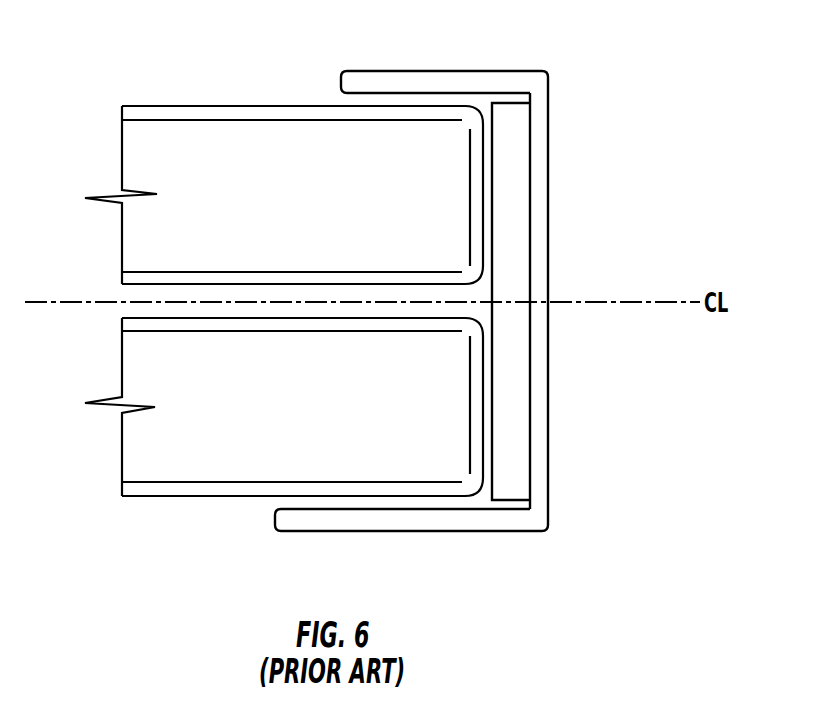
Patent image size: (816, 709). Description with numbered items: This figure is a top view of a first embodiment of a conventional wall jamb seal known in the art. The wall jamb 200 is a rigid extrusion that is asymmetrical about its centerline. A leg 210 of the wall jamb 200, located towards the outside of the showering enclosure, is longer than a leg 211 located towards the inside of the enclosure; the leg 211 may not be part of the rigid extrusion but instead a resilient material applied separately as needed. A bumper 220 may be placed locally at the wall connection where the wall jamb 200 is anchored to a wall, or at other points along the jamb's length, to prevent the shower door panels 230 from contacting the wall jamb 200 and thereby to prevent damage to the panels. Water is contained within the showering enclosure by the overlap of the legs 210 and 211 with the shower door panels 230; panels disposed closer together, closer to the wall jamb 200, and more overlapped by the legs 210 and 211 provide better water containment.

The wall jamb 200 is at (603, 206).
The leg 211 is at (508, 45).
The leg 210 is at (473, 555).
The bumper 220 is at (587, 382).
The shower door panels 230 is at (158, 232).